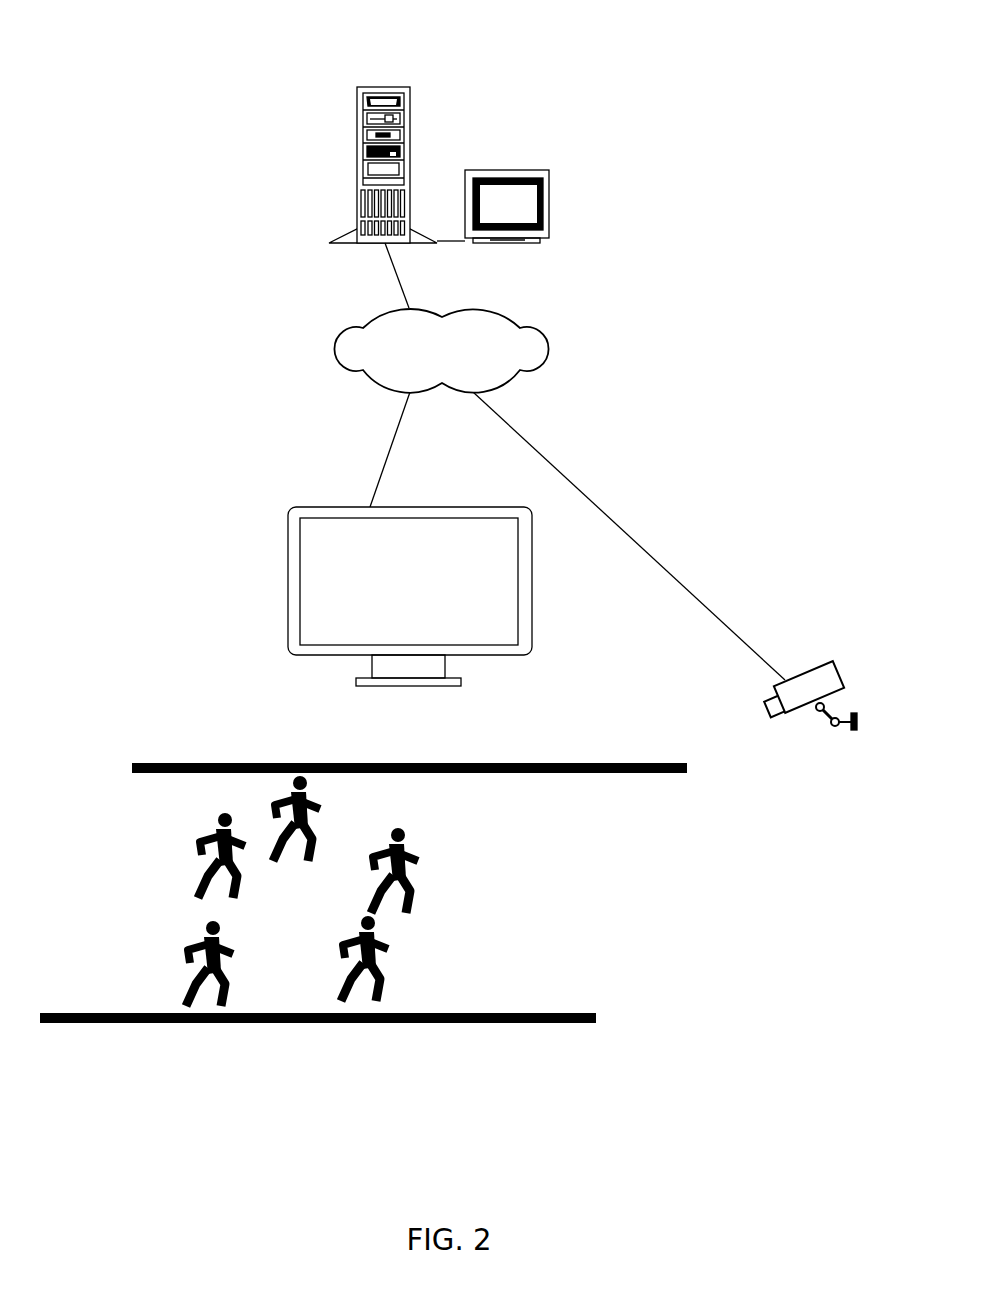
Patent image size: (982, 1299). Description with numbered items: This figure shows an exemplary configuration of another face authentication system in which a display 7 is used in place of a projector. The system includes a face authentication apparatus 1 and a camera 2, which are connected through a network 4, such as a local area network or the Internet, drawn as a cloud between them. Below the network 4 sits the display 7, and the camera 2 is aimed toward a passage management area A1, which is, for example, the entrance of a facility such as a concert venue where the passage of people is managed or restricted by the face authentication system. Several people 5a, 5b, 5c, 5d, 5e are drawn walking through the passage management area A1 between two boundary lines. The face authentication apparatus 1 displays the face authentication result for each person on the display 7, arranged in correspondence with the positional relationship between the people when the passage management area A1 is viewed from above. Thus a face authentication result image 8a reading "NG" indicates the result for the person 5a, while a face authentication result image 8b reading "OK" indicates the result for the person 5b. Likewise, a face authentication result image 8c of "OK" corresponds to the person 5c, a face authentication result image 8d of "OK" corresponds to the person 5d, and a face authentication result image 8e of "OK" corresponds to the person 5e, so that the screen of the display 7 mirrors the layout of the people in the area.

The face authentication apparatus 1 is at (383, 87).
The camera 2 is at (800, 672).
The network 4 is at (478, 309).
The display 7 is at (315, 507).
The face authentication result image 8a is at (333, 610).
The face authentication result image 8b is at (327, 557).
The face authentication result image 8c is at (430, 540).
The face authentication result image 8d is at (473, 617).
The face authentication result image 8e is at (485, 565).
The person 5a is at (218, 814).
The person 5b is at (273, 798).
The person 5c is at (397, 832).
The person 5d is at (196, 1002).
The person 5e is at (350, 1002).
The passage management area A1 is at (40, 1095).